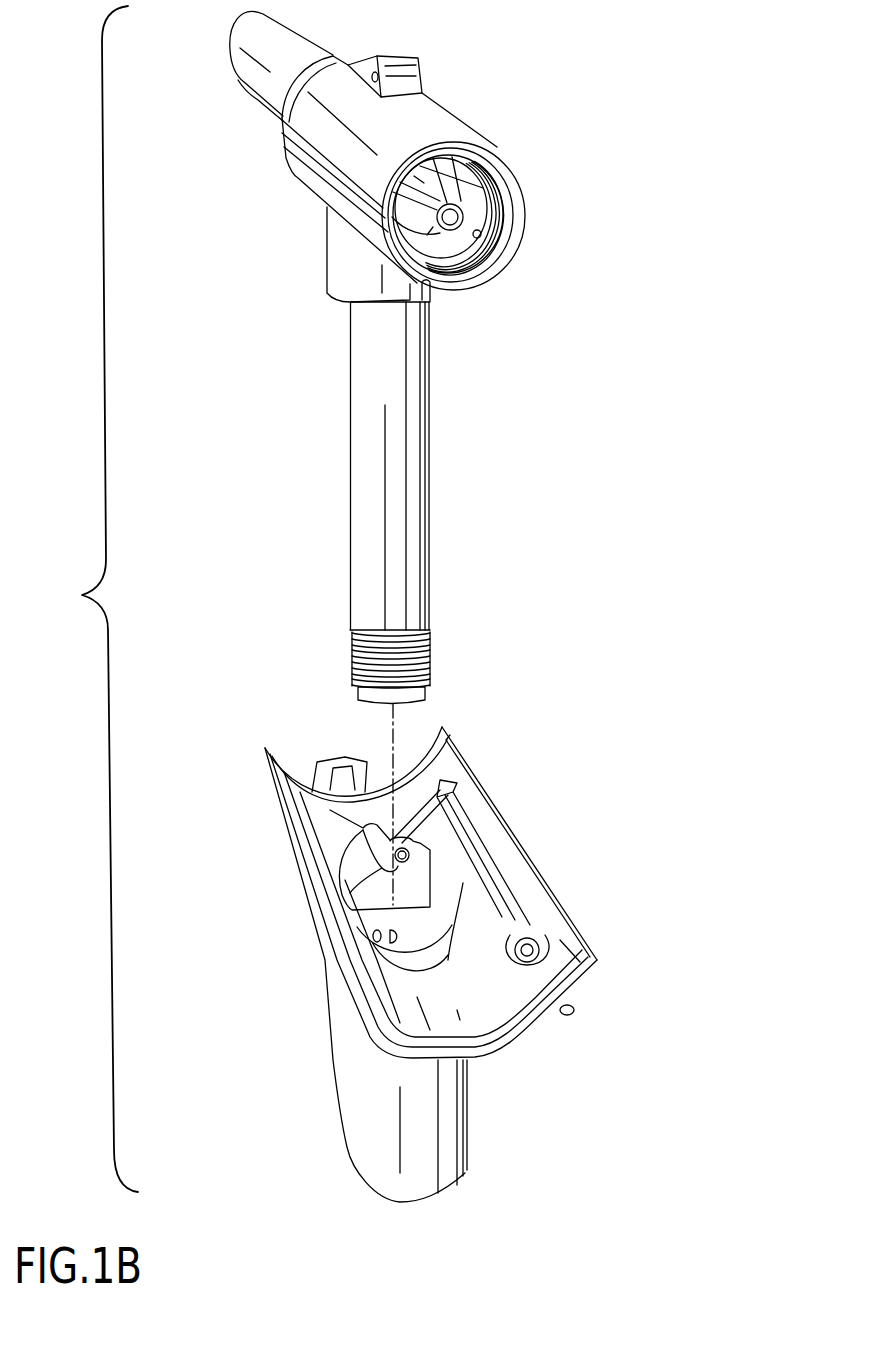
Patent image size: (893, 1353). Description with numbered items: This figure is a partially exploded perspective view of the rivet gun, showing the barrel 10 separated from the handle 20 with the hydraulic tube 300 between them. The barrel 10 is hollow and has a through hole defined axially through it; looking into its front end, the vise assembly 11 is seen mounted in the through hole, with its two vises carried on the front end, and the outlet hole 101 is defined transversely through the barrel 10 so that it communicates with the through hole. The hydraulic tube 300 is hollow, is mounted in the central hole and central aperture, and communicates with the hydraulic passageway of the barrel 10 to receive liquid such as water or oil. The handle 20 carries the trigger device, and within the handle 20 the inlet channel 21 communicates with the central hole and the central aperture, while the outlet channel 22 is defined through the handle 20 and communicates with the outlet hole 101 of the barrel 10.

The barrel 10 is at (410, 156).
The vise assembly 11 is at (452, 205).
The outlet hole 101 is at (479, 237).
The hydraulic tube 300 is at (433, 557).
The handle 20 is at (418, 964).
The inlet channel 21 is at (357, 921).
The outlet channel 22 is at (493, 893).